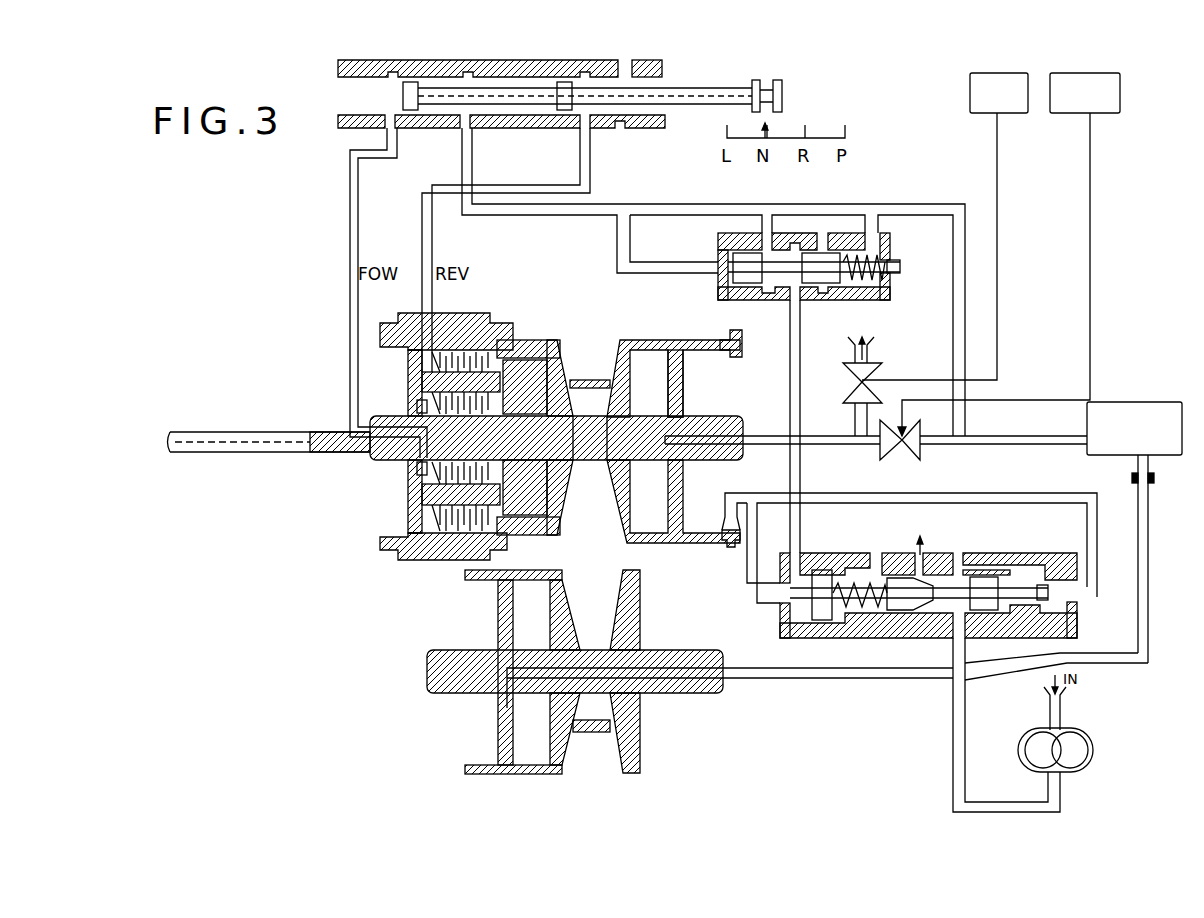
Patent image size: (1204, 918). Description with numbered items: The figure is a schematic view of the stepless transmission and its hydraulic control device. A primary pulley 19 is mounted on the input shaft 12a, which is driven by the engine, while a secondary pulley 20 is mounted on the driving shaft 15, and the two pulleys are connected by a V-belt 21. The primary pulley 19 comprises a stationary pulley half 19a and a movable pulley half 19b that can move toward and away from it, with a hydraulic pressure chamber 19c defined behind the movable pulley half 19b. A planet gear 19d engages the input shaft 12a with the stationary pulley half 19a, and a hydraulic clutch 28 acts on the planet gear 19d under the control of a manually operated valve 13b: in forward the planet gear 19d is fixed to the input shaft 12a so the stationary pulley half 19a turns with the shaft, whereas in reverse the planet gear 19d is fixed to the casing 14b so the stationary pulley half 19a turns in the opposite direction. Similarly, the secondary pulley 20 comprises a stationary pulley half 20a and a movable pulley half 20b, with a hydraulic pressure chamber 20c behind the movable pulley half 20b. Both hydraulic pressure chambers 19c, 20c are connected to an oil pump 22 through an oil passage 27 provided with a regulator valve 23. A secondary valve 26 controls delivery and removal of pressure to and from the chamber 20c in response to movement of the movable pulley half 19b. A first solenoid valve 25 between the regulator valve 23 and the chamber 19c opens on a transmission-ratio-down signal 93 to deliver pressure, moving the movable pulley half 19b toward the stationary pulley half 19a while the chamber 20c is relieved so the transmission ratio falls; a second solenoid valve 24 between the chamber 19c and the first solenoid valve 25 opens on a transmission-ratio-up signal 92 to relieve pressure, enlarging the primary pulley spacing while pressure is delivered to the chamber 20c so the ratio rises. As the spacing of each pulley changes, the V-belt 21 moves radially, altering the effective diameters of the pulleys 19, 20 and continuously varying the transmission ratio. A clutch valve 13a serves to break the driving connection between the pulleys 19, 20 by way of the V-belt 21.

The input shaft 12a is at (268, 448).
The clutch valve 13a is at (890, 298).
The manually operated valve 13b is at (572, 66).
The casing 14b is at (403, 352).
The driving shaft 15 is at (432, 674).
The primary pulley 19 is at (603, 336).
The stationary pulley half 19a is at (560, 340).
The movable pulley half 19b is at (665, 340).
The hydraulic pressure chamber 19c is at (683, 388).
The planet gear 19d is at (533, 340).
The secondary pulley 20 is at (603, 740).
The stationary pulley half 20a is at (650, 738).
The movable pulley half 20b is at (463, 768).
The hydraulic pressure chamber 20c is at (520, 720).
The V-belt 21 is at (600, 560).
The oil pump 22 is at (1095, 745).
The regulator valve 23 is at (1158, 402).
The second solenoid valve 24 is at (881, 360).
The first solenoid valve 25 is at (920, 458).
The secondary valve 26 is at (1044, 553).
The oil passage 27 is at (830, 680).
The clutch 28 is at (450, 545).
The transmission-ratio-up signal 92 is at (968, 95).
The transmission-ratio-down signal 93 is at (1121, 95).